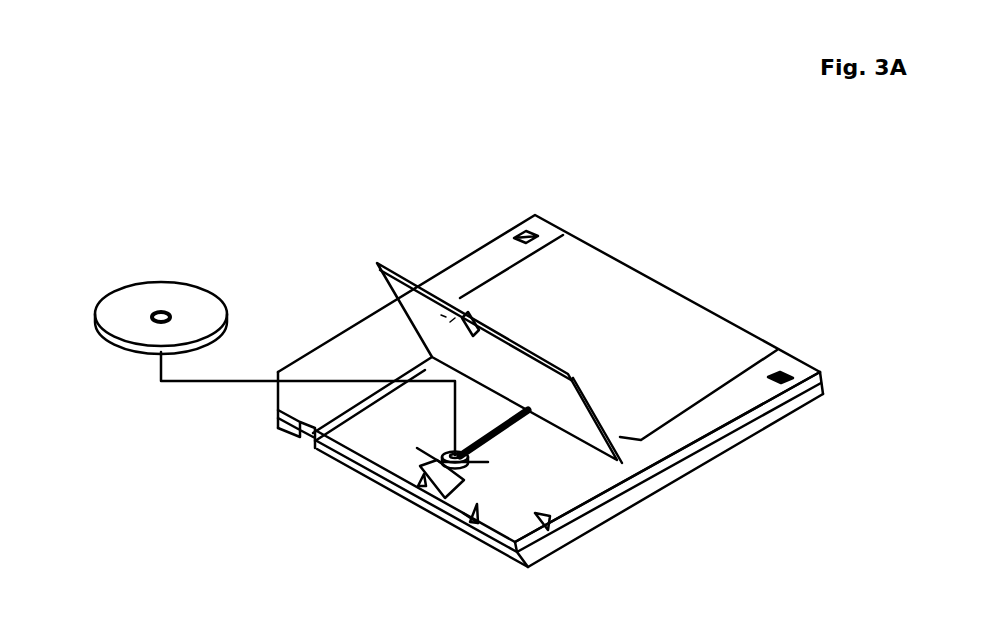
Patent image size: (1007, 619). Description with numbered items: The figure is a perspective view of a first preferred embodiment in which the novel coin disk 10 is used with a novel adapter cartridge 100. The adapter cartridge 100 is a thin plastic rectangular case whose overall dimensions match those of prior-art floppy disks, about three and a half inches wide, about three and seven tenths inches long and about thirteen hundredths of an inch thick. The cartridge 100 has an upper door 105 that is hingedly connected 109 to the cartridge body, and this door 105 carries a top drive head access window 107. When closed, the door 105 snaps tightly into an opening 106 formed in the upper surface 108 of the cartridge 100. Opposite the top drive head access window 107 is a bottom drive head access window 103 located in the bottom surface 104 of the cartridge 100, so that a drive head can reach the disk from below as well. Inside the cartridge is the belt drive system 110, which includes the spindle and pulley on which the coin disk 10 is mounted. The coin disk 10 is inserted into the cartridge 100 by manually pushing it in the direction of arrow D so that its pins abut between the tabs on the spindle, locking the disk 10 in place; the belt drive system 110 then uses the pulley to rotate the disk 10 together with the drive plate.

The adapter cartridge 100 is at (322, 113).
The coin disk 10 is at (173, 282).
The upper door 105 is at (563, 362).
The top drive head access window 107 is at (470, 328).
The belt drive system 110 is at (417, 448).
The bottom drive head access window 103 is at (412, 480).
The bottom surface 104 is at (463, 513).
The opening 106 is at (537, 520).
The upper surface 108 is at (700, 433).
The hinged connection 109 is at (630, 477).